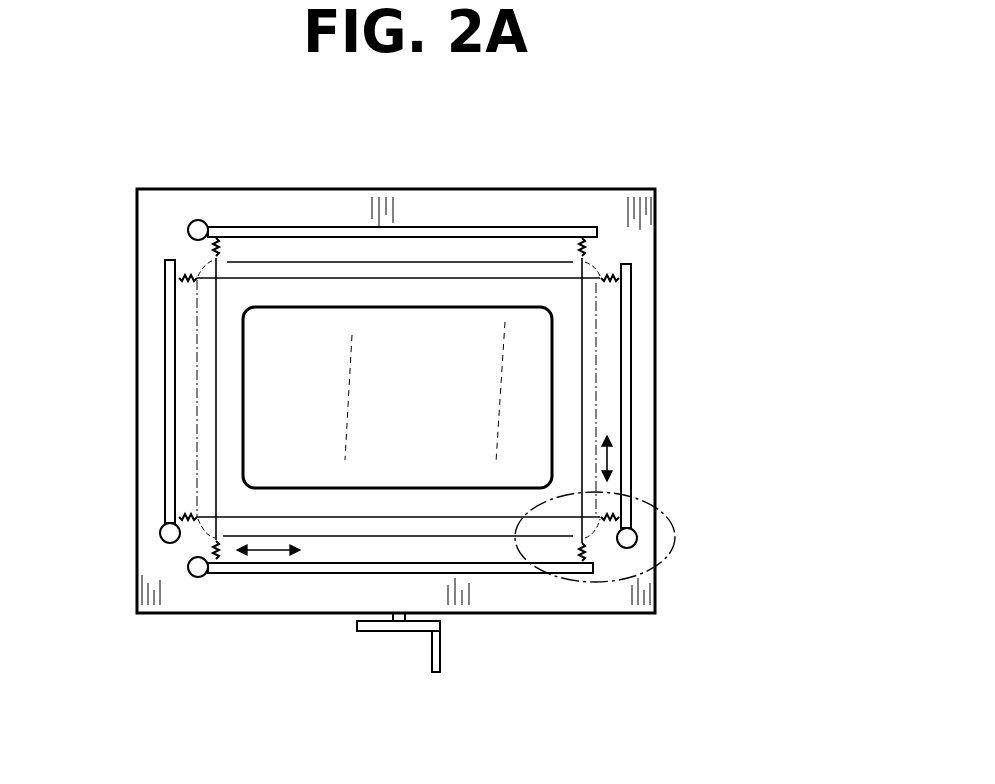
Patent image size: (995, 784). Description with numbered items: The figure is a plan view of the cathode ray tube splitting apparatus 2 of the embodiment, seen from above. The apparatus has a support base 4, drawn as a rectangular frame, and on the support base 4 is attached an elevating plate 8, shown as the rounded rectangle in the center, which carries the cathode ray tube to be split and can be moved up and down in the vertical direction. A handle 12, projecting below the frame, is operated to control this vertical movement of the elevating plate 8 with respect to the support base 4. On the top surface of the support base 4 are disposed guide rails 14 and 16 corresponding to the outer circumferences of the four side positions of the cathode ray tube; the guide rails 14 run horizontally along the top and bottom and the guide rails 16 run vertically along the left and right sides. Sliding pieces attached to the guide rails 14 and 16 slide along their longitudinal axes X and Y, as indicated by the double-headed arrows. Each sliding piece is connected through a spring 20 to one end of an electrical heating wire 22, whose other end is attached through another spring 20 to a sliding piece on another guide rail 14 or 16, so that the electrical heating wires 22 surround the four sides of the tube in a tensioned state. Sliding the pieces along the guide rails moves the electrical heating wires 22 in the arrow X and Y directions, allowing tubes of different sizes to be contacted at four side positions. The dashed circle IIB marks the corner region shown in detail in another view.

The cathode ray tube splitting apparatus 2 is at (645, 173).
The support base 4 is at (158, 229).
The elevating plate 8 is at (527, 405).
The handle 12 is at (385, 632).
The guide rail 14 is at (392, 226).
The guide rail 16 is at (173, 411).
The spring 20 is at (216, 240).
The electrical heating wire 22 is at (215, 365).
The longitudinal axis X is at (263, 552).
The longitudinal axis Y is at (609, 460).
The section IIB is at (680, 540).